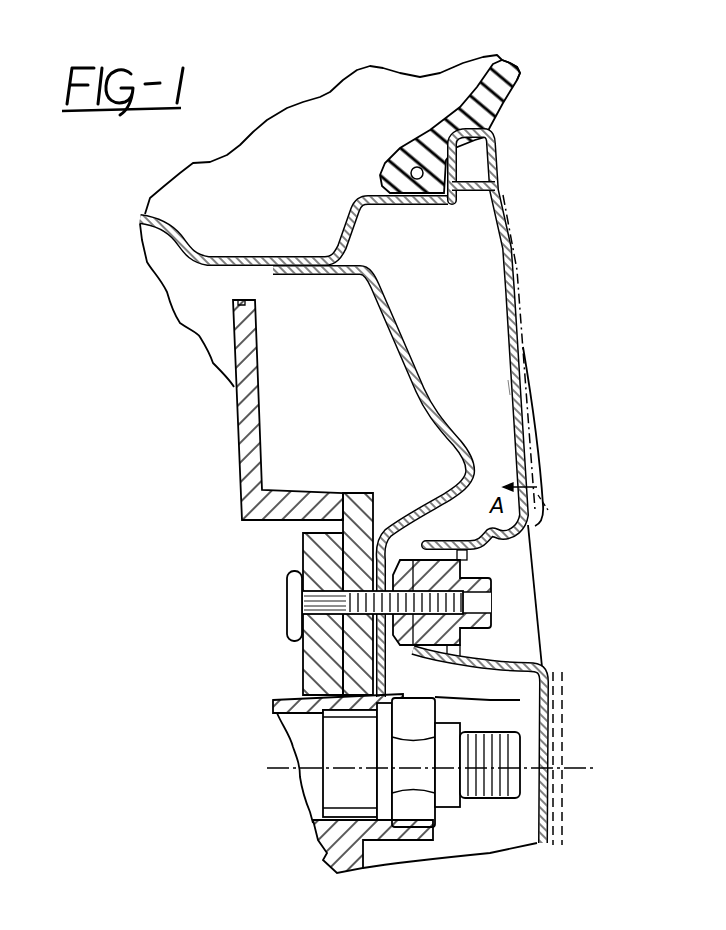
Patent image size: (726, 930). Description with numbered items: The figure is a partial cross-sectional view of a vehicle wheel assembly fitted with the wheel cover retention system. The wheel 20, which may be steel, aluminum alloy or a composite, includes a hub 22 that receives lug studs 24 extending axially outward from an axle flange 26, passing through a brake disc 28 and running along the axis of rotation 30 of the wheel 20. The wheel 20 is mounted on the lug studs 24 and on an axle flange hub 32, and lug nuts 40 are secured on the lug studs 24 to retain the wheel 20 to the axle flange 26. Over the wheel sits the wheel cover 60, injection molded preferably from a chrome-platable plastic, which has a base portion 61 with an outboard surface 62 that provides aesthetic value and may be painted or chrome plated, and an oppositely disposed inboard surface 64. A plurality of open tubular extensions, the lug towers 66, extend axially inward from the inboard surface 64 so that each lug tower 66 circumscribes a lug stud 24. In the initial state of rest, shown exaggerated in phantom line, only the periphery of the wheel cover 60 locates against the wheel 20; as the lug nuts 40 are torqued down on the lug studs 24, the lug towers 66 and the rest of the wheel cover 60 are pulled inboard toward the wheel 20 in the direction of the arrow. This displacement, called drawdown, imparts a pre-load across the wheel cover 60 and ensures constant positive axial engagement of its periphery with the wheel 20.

The wheel 20 is at (233, 256).
The hub 22 is at (403, 333).
The lug studs 24 is at (297, 612).
The axle flange 26 is at (308, 667).
The brake disc 28 is at (241, 417).
The axis of rotation 30 is at (596, 770).
The axle flange hub 32 is at (430, 697).
The lug nuts 40 is at (480, 570).
The wheel cover 60 is at (508, 194).
The base portion 61 is at (521, 377).
The outboard surface 62 is at (525, 417).
The inboard surface 64 is at (512, 387).
The lug towers 66 is at (507, 667).